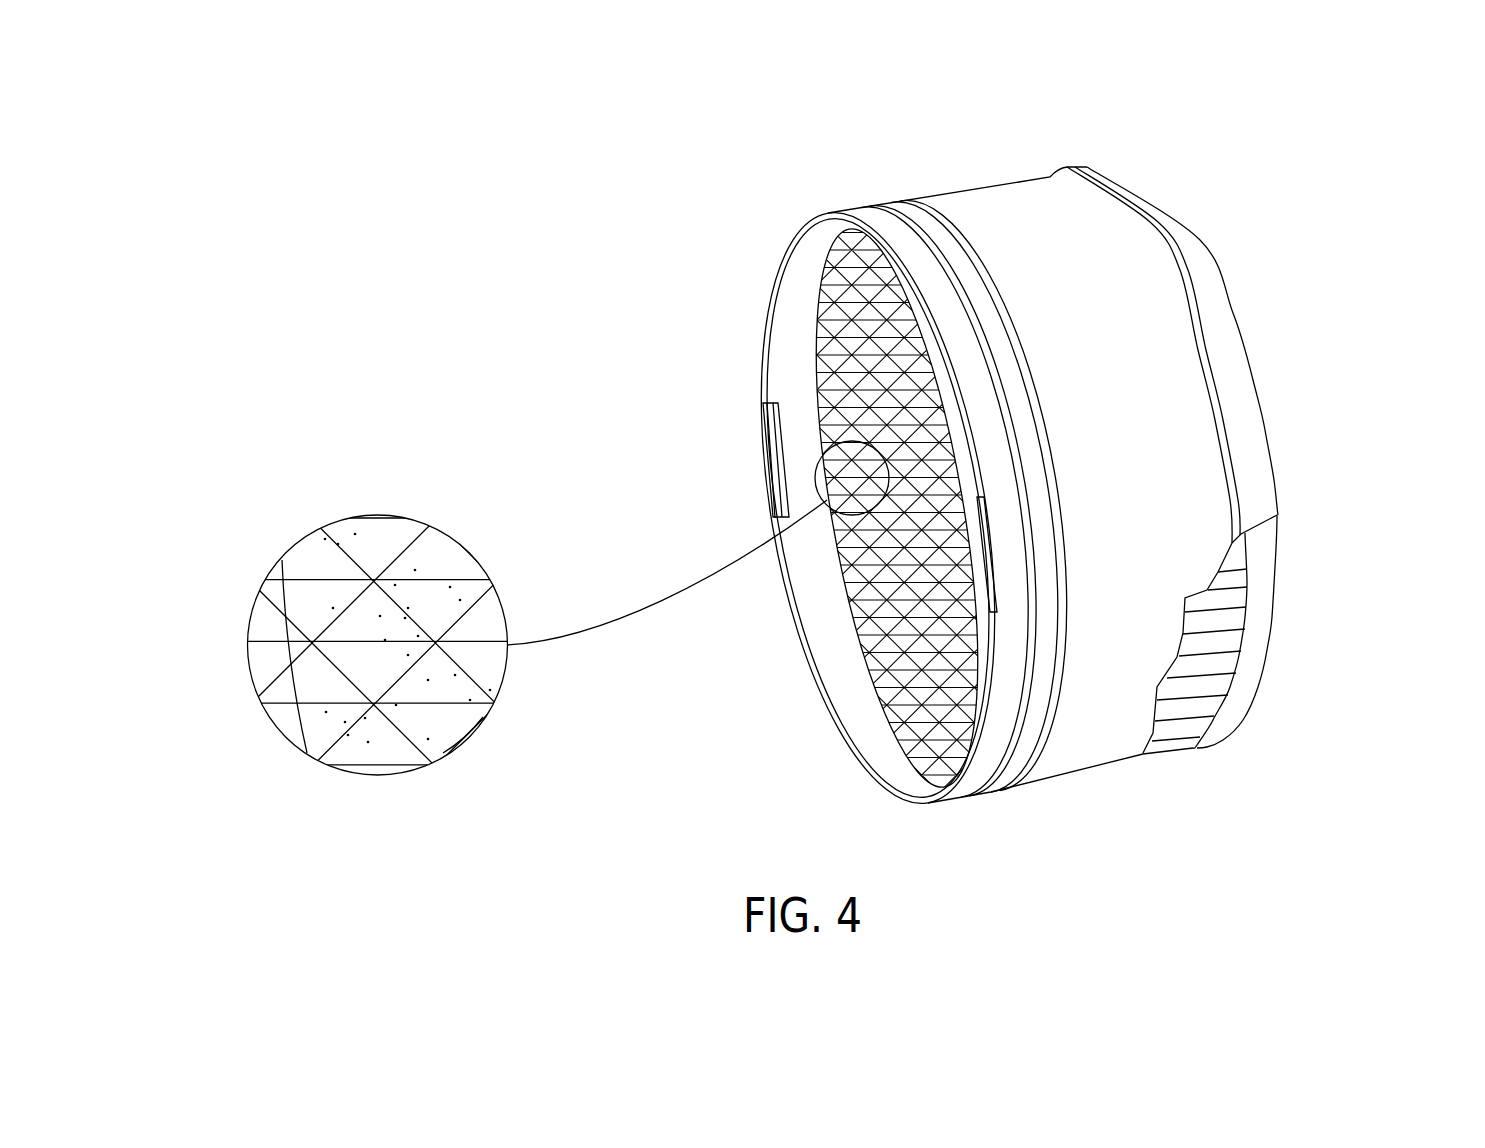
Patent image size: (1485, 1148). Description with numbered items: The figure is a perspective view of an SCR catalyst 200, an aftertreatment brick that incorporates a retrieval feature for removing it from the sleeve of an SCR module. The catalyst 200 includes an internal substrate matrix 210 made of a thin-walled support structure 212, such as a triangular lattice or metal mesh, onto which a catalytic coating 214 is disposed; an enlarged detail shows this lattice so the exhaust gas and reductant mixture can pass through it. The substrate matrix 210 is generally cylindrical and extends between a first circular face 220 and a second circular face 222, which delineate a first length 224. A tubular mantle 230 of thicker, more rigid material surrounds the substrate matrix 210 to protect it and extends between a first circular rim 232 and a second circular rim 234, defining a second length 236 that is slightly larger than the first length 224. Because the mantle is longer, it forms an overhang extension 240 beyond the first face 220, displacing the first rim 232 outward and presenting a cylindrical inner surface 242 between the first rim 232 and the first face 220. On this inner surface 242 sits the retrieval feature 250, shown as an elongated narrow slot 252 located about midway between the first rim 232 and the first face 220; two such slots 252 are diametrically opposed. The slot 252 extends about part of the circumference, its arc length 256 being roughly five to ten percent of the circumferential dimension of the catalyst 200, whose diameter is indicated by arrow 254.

The SCR catalyst 200 is at (724, 168).
The substrate matrix 210 is at (1200, 675).
The support structure 212 is at (347, 643).
The catalytic coating 214 is at (311, 696).
The first circular face 220 is at (870, 628).
The second circular face 222 is at (1247, 623).
The first length 224 is at (948, 797).
The tubular mantle 230 is at (1127, 270).
The first circular rim 232 is at (768, 294).
The second circular rim 234 is at (1275, 560).
The second length 236 is at (1120, 109).
The overhang extension 240 is at (847, 684).
The cylindrical inner surface 242 is at (885, 765).
The retrieval feature 250 is at (773, 403).
The slot 252 is at (987, 543).
The diameter 254 is at (557, 263).
The arc length 256 is at (675, 413).